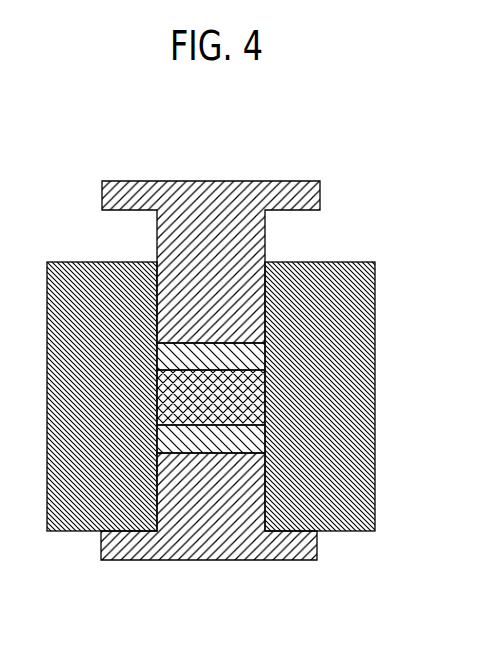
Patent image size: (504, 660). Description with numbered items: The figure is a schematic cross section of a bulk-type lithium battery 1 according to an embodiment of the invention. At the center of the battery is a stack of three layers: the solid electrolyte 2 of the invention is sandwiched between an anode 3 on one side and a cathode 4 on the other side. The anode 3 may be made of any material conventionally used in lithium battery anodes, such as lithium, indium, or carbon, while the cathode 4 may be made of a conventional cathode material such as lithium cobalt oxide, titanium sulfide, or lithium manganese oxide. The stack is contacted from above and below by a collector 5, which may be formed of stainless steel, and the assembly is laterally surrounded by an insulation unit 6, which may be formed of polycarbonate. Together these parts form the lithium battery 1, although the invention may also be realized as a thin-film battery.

The lithium battery 1 is at (370, 158).
The solid electrolyte 2 is at (248, 386).
The anode 3 is at (243, 346).
The cathode 4 is at (235, 428).
The collector 5 is at (305, 183).
The insulation unit 6 is at (338, 284).